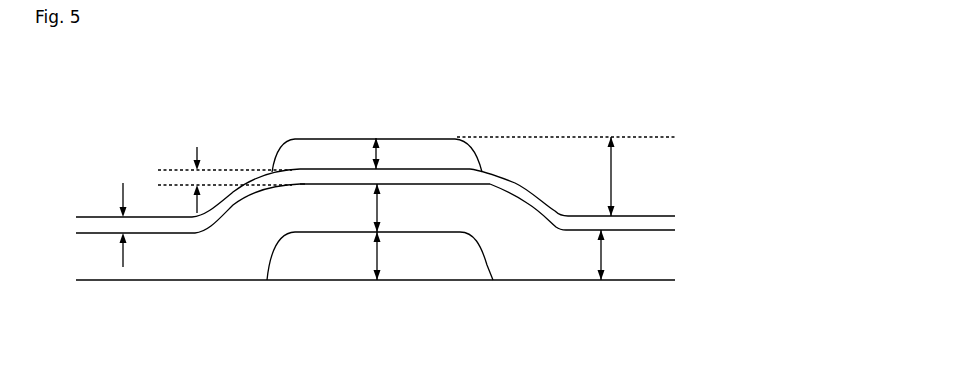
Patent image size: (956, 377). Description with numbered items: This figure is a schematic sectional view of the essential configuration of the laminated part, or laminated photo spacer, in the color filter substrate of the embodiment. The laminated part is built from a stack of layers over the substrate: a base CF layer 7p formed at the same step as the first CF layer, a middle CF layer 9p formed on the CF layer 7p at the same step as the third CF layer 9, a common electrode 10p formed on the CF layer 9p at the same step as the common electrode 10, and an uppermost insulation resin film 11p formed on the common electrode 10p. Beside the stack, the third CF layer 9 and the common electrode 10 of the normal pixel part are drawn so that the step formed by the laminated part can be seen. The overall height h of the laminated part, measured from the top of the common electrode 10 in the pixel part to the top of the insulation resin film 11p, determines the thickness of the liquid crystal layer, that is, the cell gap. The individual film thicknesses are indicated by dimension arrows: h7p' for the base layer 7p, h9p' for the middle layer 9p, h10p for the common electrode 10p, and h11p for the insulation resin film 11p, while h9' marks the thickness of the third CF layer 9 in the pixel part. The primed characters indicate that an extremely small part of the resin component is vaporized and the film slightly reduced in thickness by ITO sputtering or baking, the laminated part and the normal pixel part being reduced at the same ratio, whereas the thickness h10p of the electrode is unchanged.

The CF layer 7p is at (288, 272).
The third CF layer 9 is at (668, 257).
The CF layer 9p is at (307, 197).
The common electrode 10 is at (662, 223).
The common electrode 10p is at (328, 180).
The insulation resin film 11p is at (363, 145).
The height of the laminated PS h is at (567, 176).
The film thickness of the common electrode 10p h10p is at (192, 175).
The film thickness of the insulation resin film 11p h11p is at (378, 153).
The film thickness of the CF layer 9p after reduction h9p' is at (442, 276).
The film thickness of the CF layer 7p after reduction h7p' is at (342, 300).
The film thickness of the third CF layer 9 after reduction h9' is at (642, 296).